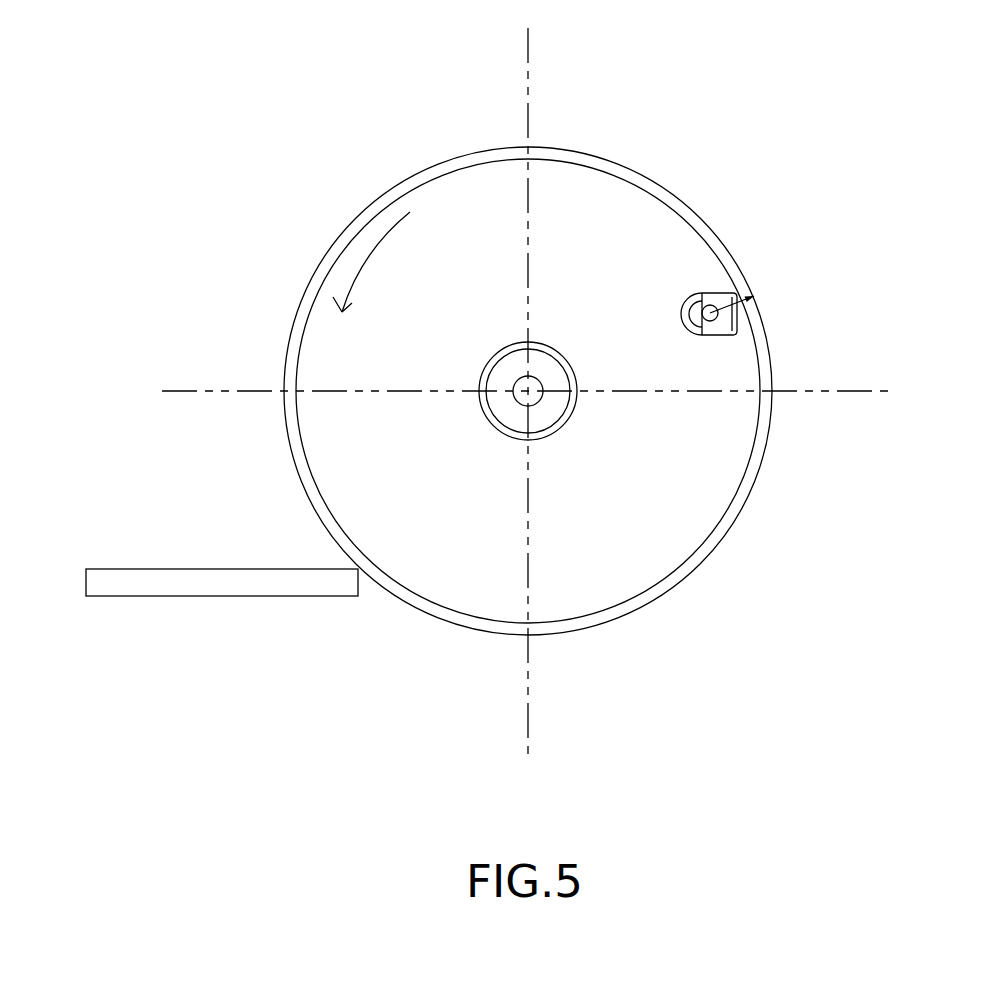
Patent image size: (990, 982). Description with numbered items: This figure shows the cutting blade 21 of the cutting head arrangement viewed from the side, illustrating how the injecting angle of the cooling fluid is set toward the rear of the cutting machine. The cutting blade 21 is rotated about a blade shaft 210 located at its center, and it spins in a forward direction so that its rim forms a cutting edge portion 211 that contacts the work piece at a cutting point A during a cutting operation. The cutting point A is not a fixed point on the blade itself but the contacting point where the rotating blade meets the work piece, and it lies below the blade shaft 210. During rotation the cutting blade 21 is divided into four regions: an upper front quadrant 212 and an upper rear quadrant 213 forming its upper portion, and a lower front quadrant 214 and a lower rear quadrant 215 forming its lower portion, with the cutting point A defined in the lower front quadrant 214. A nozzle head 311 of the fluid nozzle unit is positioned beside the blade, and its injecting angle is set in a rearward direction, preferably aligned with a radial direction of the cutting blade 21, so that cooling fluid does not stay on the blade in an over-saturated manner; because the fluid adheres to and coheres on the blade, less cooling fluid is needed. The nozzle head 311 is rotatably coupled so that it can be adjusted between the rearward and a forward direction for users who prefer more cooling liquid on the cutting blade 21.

The cutting blade 21 is at (601, 341).
The blade shaft 210 is at (532, 397).
The cutting edge portion 211 is at (765, 435).
The upper front quadrant 212 is at (347, 197).
The upper rear quadrant 213 is at (573, 358).
The lower front quadrant 214 is at (292, 538).
The lower rear quadrant 215 is at (703, 573).
The nozzle head 311 is at (710, 313).
The cutting point A is at (367, 590).